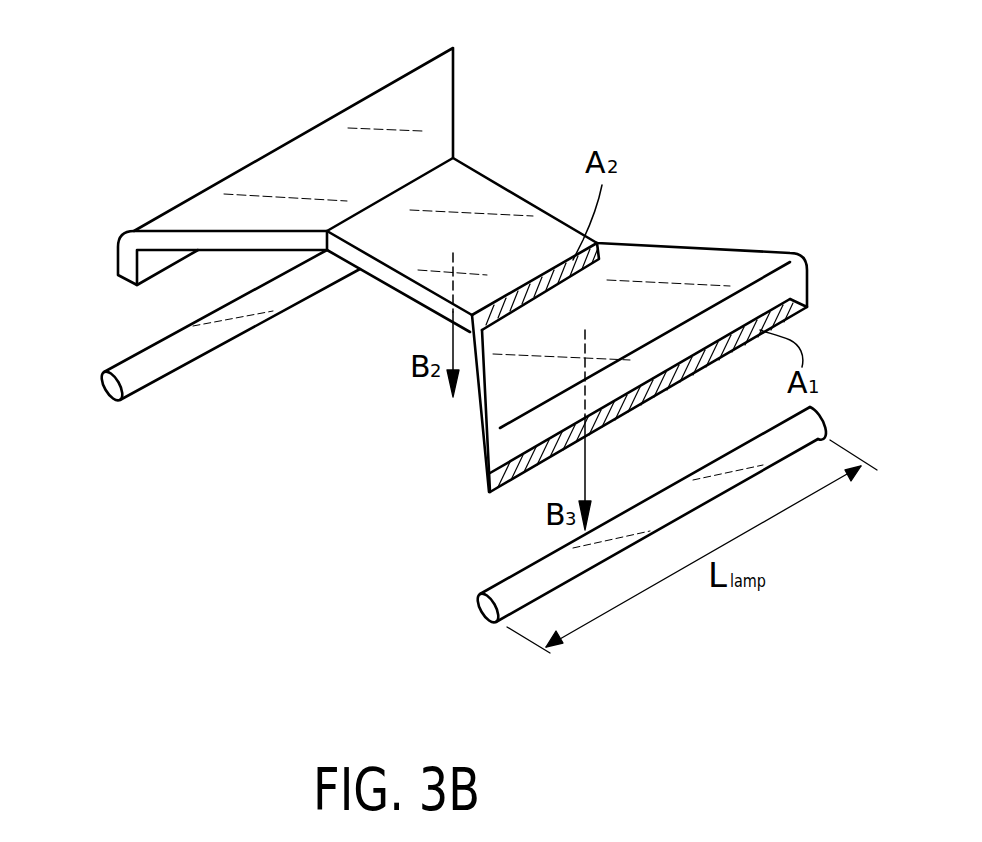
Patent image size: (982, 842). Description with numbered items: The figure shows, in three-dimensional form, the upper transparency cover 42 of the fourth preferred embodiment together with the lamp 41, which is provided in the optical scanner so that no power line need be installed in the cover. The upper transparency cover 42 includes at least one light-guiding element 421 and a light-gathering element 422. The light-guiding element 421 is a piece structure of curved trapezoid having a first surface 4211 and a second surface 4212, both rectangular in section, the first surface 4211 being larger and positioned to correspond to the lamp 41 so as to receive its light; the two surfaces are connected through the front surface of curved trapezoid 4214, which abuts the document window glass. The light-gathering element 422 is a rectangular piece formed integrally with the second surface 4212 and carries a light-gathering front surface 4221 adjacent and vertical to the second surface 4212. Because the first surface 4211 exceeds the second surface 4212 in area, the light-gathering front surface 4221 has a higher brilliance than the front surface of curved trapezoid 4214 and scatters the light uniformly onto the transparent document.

The lamp 41 is at (134, 371).
The upper transparency cover 42 is at (462, 267).
The light-guiding element 421 is at (420, 131).
The light-gathering element 422 is at (493, 202).
The first surface 4211 is at (488, 474).
The second surface 4212 is at (473, 383).
The front surface of curved trapezoid 4214 is at (230, 252).
The light-gathering front surface 4221 is at (385, 288).